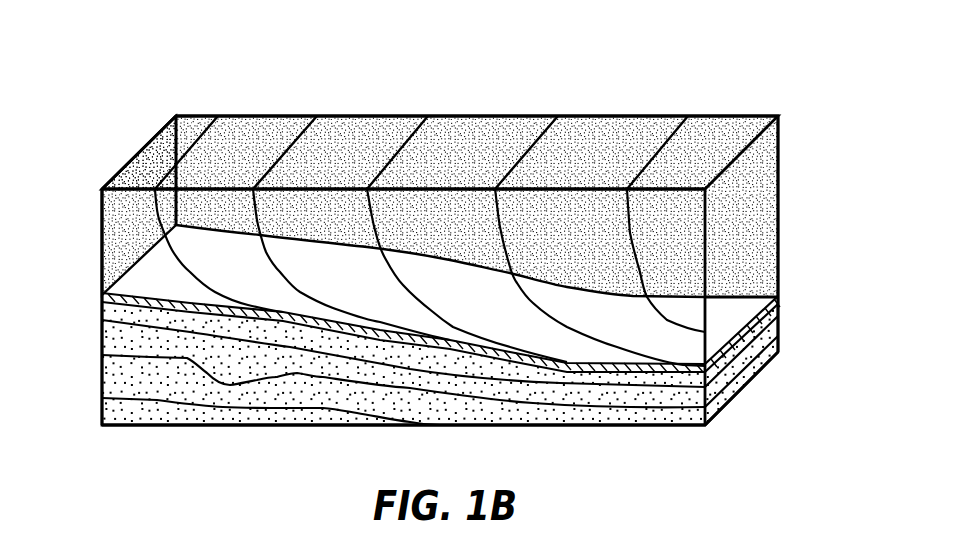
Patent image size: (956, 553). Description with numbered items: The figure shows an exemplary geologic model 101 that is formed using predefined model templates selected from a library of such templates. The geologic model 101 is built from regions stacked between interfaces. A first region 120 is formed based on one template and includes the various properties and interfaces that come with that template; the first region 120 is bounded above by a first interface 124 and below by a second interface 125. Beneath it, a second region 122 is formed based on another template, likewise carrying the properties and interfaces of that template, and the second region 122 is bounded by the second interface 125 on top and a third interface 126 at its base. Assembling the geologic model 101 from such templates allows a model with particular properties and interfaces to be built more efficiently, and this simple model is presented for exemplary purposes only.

The geologic model 101 is at (246, 52).
The first region 120 is at (753, 230).
The second region 122 is at (120, 382).
The first interface 124 is at (633, 116).
The second interface 125 is at (753, 325).
The third interface 126 is at (633, 425).